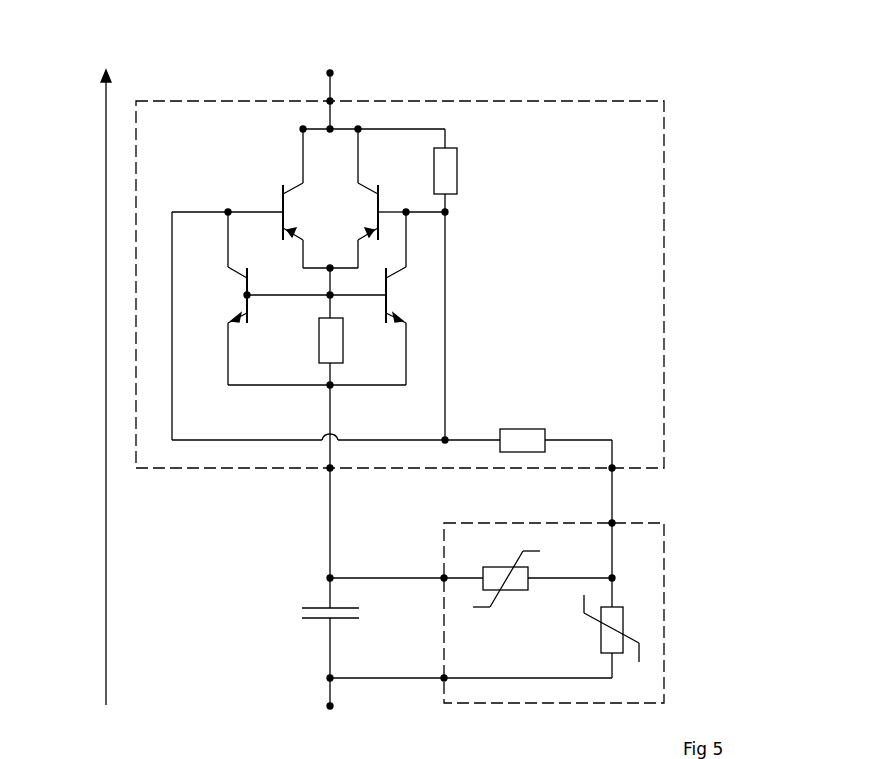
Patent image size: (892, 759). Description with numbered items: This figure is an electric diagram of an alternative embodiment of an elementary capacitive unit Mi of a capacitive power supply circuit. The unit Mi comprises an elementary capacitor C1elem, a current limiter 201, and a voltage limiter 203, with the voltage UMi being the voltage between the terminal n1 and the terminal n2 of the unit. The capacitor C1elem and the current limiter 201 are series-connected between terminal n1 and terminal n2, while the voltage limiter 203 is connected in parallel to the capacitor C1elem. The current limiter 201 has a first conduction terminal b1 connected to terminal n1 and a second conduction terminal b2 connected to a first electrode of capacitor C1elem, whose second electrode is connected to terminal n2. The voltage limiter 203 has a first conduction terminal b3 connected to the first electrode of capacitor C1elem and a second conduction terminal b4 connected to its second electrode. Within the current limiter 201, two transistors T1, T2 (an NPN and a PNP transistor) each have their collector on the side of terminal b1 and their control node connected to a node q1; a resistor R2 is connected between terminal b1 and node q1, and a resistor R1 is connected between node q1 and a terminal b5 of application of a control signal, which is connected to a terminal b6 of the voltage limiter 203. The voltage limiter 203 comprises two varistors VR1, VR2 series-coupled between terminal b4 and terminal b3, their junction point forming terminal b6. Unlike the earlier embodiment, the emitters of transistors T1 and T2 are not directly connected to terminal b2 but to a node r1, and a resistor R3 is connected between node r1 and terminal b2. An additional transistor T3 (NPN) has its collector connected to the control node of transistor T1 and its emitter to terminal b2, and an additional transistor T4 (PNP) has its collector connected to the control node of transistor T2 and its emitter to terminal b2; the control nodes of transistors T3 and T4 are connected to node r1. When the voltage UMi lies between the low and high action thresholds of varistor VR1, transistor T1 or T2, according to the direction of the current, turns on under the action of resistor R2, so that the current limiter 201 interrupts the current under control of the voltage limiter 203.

The voltage between terminals n1 and n2 UMi is at (84, 387).
The elementary capacitive unit Mi is at (647, 90).
The current limiter 201 is at (664, 188).
The voltage limiter 203 is at (664, 573).
The terminal n1 is at (333, 72).
The terminal n2 is at (328, 708).
The first conduction terminal b1 is at (328, 100).
The second conduction terminal b2 is at (328, 470).
The first conduction terminal b3 is at (442, 576).
The second conduction terminal b4 is at (443, 680).
The control signal application terminal b5 is at (614, 470).
The control signal supply terminal b6 is at (610, 521).
The node q1 is at (447, 438).
The node r1 is at (327, 297).
The transistor T1 is at (380, 192).
The transistor T2 is at (281, 192).
The additional transistor T3 is at (388, 280).
The additional transistor T4 is at (245, 276).
The resistor R1 is at (528, 429).
The resistor R2 is at (458, 172).
The resistor R3 is at (318, 353).
The varistor VR1 is at (600, 636).
The varistor VR2 is at (513, 591).
The elementary capacitor C1elem is at (315, 619).